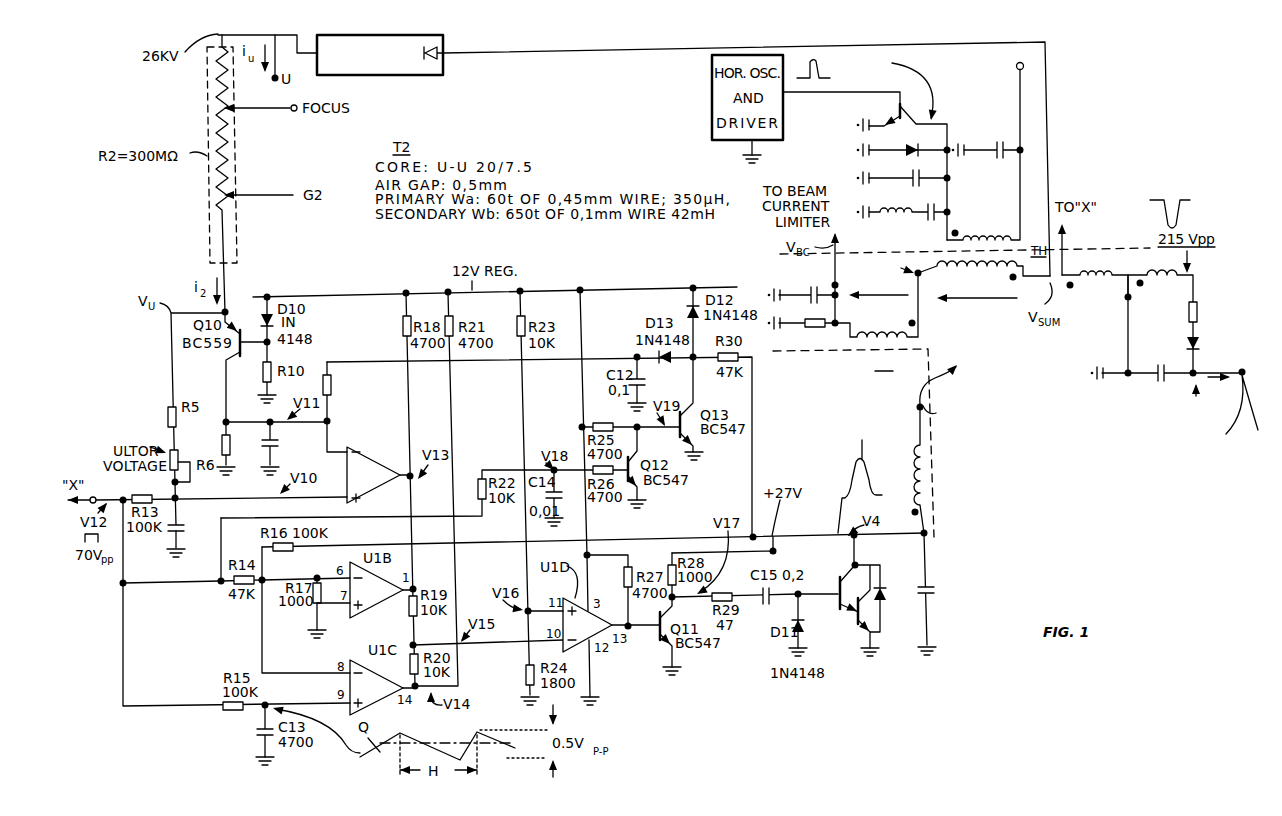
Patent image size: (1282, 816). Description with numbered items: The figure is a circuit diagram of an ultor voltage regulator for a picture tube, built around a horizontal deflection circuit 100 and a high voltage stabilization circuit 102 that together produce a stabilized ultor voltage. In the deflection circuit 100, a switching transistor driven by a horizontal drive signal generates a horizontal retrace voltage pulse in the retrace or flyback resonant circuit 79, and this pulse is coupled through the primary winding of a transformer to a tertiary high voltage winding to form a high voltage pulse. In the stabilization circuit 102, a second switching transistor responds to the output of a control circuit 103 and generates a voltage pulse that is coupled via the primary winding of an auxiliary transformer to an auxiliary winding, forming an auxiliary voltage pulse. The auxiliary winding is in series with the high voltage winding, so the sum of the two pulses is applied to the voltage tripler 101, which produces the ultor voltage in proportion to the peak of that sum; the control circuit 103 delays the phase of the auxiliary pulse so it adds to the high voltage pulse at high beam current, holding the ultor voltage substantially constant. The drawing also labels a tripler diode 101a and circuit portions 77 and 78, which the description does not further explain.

The horizontal deflection circuit 100 is at (910, 147).
The voltage tripler 101 is at (402, 67).
The tripler diode 101a is at (445, 56).
The high voltage stabilization circuit 102 is at (860, 385).
The control circuit 103 is at (498, 411).
The supply voltage circuit 77 is at (1170, 331).
The modulator output circuit 78 is at (970, 556).
The retrace or flyback resonant circuit 79 is at (900, 202).